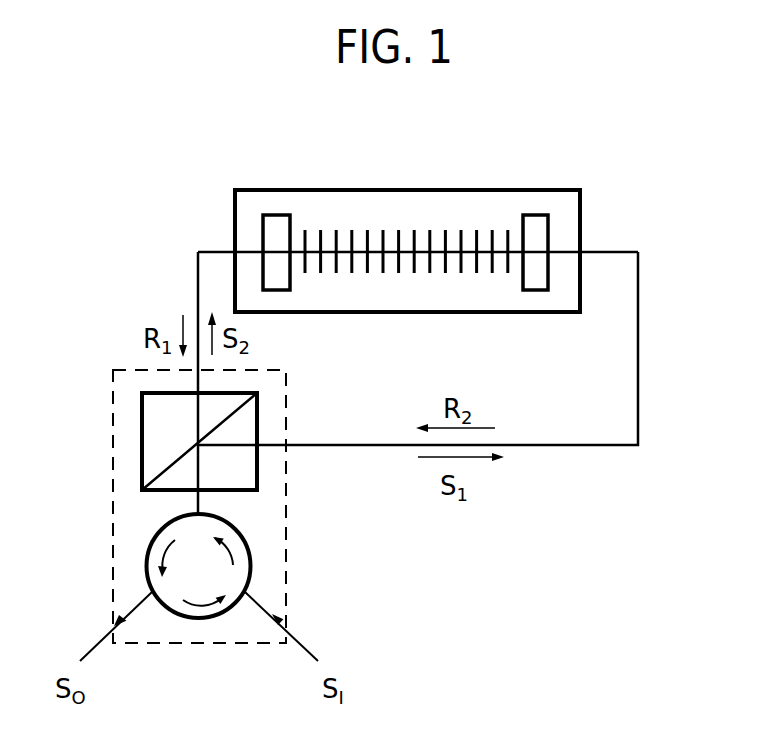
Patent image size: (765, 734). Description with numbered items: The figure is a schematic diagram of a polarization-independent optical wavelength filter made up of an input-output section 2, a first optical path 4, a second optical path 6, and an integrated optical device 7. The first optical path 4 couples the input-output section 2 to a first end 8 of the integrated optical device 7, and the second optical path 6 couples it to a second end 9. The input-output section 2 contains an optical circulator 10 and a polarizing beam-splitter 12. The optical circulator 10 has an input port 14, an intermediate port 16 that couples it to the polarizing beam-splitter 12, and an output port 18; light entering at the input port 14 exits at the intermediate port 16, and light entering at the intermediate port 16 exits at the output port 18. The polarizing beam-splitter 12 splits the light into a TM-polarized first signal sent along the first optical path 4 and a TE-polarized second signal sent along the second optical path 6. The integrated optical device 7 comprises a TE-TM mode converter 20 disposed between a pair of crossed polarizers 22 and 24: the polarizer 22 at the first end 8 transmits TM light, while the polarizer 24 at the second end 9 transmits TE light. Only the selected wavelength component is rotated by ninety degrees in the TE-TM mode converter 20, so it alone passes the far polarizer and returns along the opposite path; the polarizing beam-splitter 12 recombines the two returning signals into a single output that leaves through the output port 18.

The input-output section 2 is at (112, 503).
The first optical path 4 is at (640, 353).
The second optical path 6 is at (196, 288).
The integrated optical device 7 is at (467, 313).
The first end 8 is at (582, 225).
The second end 9 is at (234, 232).
The optical circulator 10 is at (250, 554).
The polarizing beam-splitter 12 is at (258, 412).
The input port 14 is at (262, 607).
The intermediate port 16 is at (200, 503).
The output port 18 is at (118, 618).
The TE-TM mode converter 20 is at (418, 230).
The polarizer 22 is at (536, 215).
The polarizer 24 is at (273, 215).